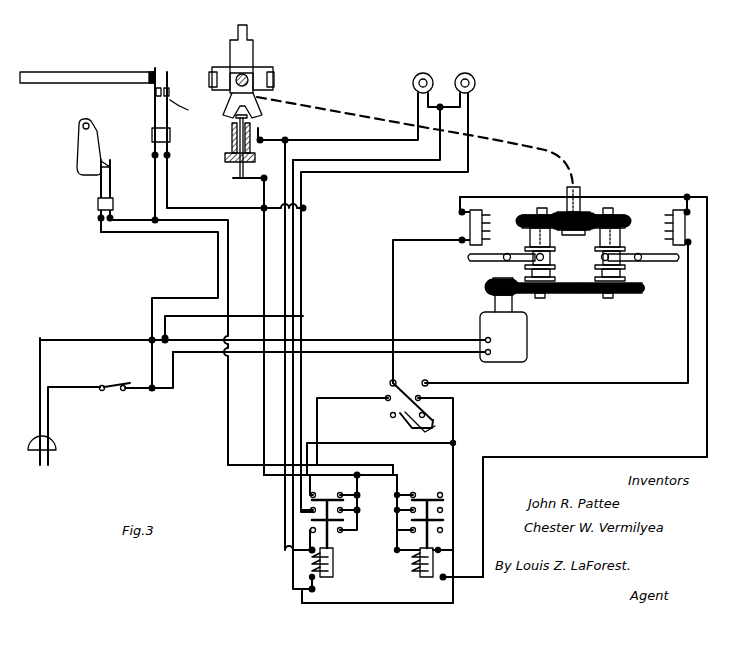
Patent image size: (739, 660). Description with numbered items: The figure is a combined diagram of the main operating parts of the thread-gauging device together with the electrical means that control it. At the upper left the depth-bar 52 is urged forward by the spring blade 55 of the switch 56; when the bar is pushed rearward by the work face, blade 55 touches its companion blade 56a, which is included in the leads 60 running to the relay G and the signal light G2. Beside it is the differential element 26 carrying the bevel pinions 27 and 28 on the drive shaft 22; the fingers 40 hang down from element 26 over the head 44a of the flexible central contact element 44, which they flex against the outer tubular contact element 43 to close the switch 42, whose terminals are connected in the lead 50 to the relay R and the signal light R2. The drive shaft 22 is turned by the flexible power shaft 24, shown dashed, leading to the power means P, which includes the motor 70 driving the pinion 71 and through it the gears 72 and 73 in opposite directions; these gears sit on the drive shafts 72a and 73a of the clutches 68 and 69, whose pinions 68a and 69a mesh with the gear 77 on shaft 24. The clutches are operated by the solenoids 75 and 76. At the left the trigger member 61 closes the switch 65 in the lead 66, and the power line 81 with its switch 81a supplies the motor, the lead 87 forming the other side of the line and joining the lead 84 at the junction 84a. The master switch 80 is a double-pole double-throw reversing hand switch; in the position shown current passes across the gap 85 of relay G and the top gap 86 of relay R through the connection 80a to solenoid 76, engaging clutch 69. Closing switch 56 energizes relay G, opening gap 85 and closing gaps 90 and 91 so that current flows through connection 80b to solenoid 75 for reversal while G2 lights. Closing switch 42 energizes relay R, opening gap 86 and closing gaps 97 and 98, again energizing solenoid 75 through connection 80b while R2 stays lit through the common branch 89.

The depth-bar 52 is at (86, 77).
The switch 56 is at (164, 60).
The companion blade 56a is at (185, 108).
The spring blade 55 is at (152, 128).
The element 26 is at (265, 52).
The bevel pinion 28 is at (215, 68).
The bevel pinion 27 is at (271, 70).
The drive shaft 22 is at (242, 71).
The fingers 40 is at (223, 116).
The switch 42 is at (226, 128).
The outer tubular contact element 43 is at (232, 148).
The flexible central contact element 44 is at (240, 171).
The head 44a is at (250, 120).
The flexible power shaft 24 is at (327, 116).
The trigger member 61 is at (79, 156).
The switch 65 is at (96, 201).
The leads 60 is at (156, 170).
The lead 66 is at (124, 222).
The lead 87 is at (168, 326).
The junction 84a is at (304, 316).
The power line 81 is at (40, 384).
The switch 81a is at (111, 389).
The lead 50 is at (332, 139).
The common branch 89 is at (370, 166).
The signal light R2 is at (421, 74).
The signal light G2 is at (465, 74).
The power means P is at (652, 180).
The solenoid 75 is at (482, 220).
The solenoid 76 is at (670, 224).
The gear 77 is at (590, 202).
The pinion 68a is at (538, 214).
The pinion 69a is at (616, 214).
The clutch 68 is at (523, 246).
The clutch 69 is at (632, 268).
The pinion 71 is at (492, 289).
The gear 72 is at (550, 312).
The drive shaft 72a is at (552, 318).
The gear 73 is at (620, 312).
The drive shaft 73a is at (618, 318).
The motor 70 is at (534, 346).
The master switch 80 is at (368, 389).
The connection 80a is at (424, 380).
The connection 80b is at (388, 380).
The lead 84 is at (566, 457).
The top gap 86 is at (322, 534).
The gap 85 is at (424, 526).
The gap 97 is at (344, 498).
The gap 98 is at (344, 516).
The gap 90 is at (442, 495).
The gap 91 is at (442, 512).
The relay R is at (344, 579).
The relay G is at (403, 579).